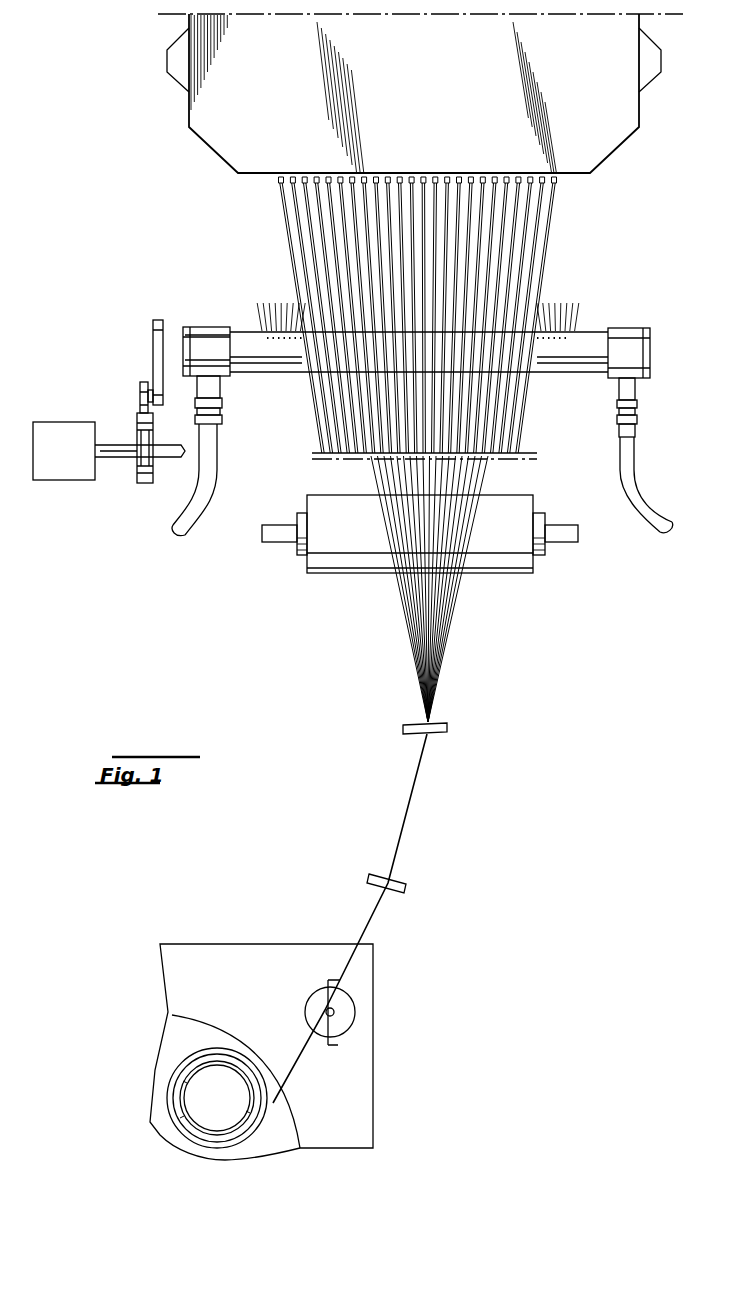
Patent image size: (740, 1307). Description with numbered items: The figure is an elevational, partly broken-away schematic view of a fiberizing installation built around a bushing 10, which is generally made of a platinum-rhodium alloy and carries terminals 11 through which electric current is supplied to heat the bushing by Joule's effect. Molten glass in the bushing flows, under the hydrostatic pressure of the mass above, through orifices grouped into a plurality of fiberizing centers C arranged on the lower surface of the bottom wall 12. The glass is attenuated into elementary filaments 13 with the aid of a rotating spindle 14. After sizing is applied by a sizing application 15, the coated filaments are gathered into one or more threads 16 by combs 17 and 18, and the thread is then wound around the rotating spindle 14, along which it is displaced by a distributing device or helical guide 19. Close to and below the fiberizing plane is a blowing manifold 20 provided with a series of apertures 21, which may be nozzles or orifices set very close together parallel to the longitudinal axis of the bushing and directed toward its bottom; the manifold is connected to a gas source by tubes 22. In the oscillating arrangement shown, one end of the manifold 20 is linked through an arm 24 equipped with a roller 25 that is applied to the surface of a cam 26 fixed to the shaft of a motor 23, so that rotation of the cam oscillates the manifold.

The bushing 10 is at (449, 72).
The terminals 11 is at (667, 112).
The bottom wall 12 is at (575, 174).
The fiberizing centers C is at (423, 173).
The elementary filaments 13 is at (347, 432).
The rotating spindle 14 is at (217, 1063).
The sizing application 15 is at (350, 563).
The threads 16 is at (402, 820).
The comb 17 is at (440, 732).
The comb 18 is at (397, 888).
The helical guide 19 is at (310, 1007).
The blowing manifold 20 is at (572, 358).
The apertures 21 is at (268, 341).
The tubes 22 is at (633, 500).
The drive motor 23 is at (49, 463).
The arm 24 is at (155, 338).
The roller 25 is at (140, 392).
The cam 26 is at (143, 470).